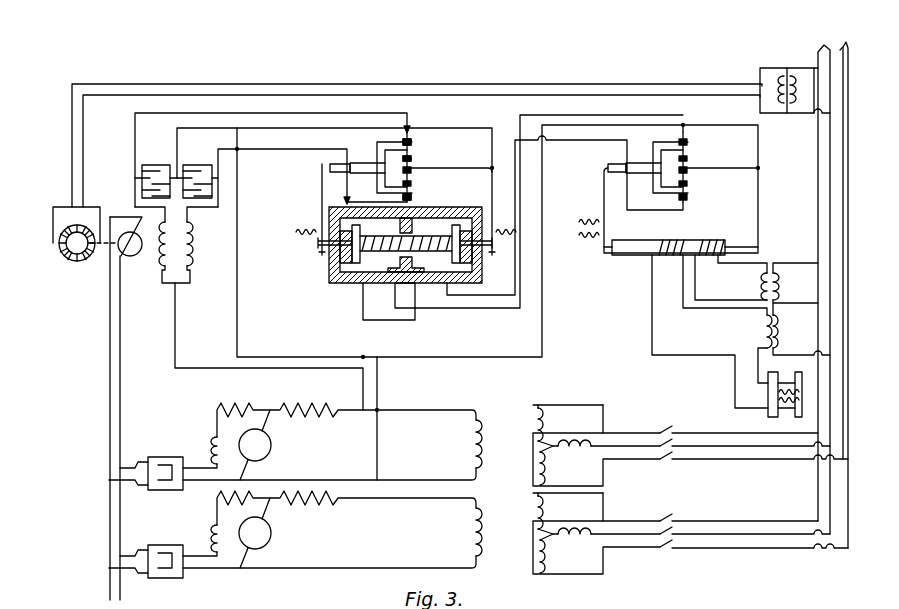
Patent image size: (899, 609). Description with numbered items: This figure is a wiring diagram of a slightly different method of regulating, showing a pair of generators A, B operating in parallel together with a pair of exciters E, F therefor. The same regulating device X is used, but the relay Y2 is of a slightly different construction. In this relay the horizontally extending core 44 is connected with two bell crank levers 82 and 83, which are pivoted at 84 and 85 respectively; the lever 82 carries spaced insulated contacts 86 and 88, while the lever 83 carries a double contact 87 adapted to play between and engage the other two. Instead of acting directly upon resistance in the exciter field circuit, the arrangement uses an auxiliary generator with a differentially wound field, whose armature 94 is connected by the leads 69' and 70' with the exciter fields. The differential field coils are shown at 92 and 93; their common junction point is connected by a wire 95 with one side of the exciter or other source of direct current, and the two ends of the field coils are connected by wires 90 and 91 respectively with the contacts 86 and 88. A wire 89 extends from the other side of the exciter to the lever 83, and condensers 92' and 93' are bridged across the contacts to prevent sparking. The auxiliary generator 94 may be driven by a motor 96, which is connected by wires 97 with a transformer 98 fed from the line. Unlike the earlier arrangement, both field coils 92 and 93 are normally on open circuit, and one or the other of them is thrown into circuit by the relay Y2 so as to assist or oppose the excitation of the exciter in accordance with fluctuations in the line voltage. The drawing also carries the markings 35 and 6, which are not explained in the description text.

The wires 97 is at (364, 85).
The wire 90 is at (312, 101).
The wire 89 is at (453, 129).
The wire 91 is at (273, 141).
The condenser 92' is at (156, 163).
The condenser 93' is at (197, 166).
The differential field coil 92 is at (161, 249).
The differential field coil 93 is at (208, 243).
The wire 95 is at (177, 331).
The motor 96 is at (58, 257).
The armature of the auxiliary generator 94 is at (118, 252).
The lead 69' is at (86, 408).
The lead 70' is at (141, 428).
The insulated contact 86 is at (413, 143).
The double contact 87 is at (413, 161).
The insulated contact 88 is at (413, 196).
The pivot 84 is at (330, 168).
The bell crank lever 82 is at (320, 198).
The pivot 85 is at (496, 170).
The bell crank lever 83 is at (496, 192).
The core 44 is at (409, 252).
The conductor 35 is at (380, 438).
The transformer 98 is at (792, 70).
The supply conductors 6 is at (827, 56).
The relay Y2 is at (424, 207).
The regulating device X is at (669, 190).
The exciter E is at (295, 446).
The exciter F is at (295, 534).
The generator A is at (675, 445).
The generator B is at (676, 533).